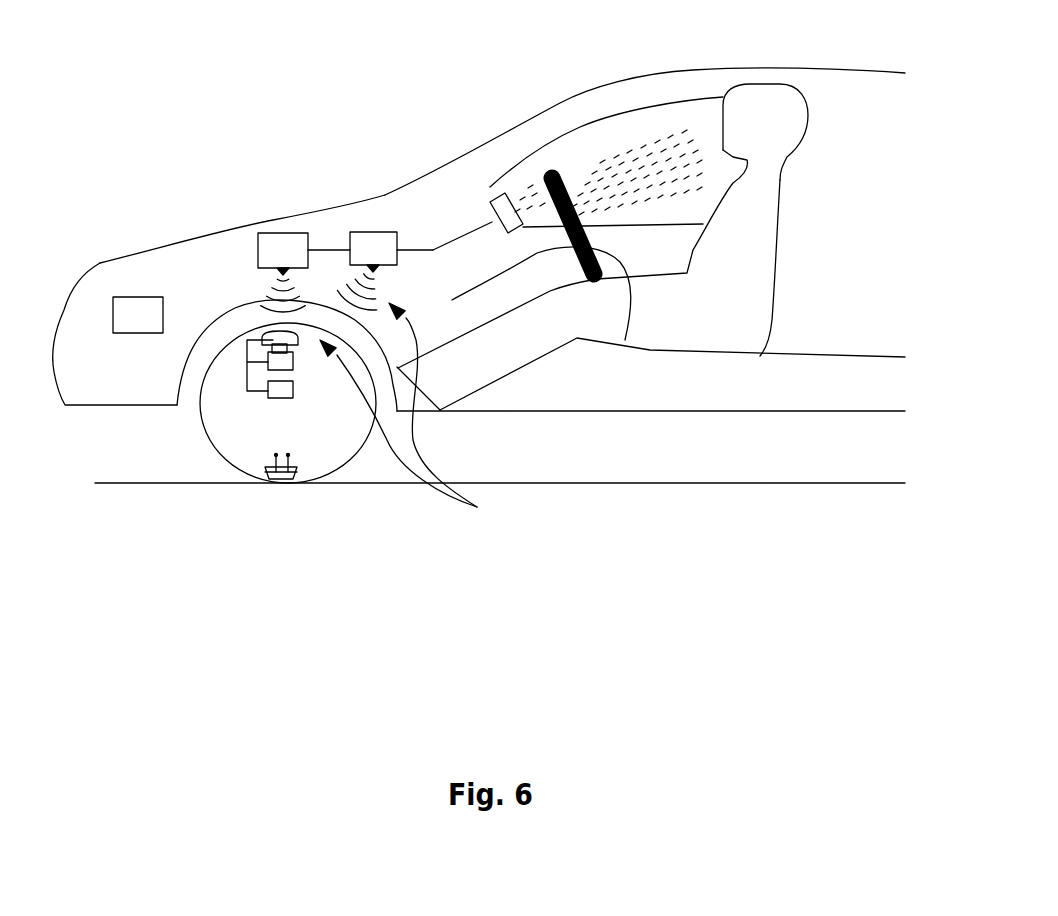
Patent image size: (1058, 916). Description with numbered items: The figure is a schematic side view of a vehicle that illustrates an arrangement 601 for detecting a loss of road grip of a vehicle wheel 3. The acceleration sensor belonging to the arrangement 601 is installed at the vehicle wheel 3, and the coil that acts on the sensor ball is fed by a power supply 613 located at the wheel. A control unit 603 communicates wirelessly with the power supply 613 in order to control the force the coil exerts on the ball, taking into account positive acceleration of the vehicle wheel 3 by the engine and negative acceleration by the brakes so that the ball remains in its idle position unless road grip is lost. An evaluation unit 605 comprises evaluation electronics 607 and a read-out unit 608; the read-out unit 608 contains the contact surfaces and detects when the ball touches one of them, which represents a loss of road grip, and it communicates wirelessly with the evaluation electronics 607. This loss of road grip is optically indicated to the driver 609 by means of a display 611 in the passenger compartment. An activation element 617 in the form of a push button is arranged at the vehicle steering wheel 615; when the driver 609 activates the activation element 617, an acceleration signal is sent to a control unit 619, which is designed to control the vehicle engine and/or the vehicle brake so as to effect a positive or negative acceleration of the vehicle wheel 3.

The arrangement 601 is at (167, 167).
The control unit 603 is at (283, 233).
The evaluation electronics 607 is at (377, 232).
The display 611 is at (490, 203).
The activation element 617 is at (572, 185).
The driver 609 is at (783, 190).
The control unit 619 is at (147, 297).
The power supply 613 is at (247, 362).
The read-out unit 608 is at (277, 400).
The vehicle wheel 3 is at (358, 452).
The evaluation unit 605 is at (427, 414).
The vehicle steering wheel 615 is at (625, 340).